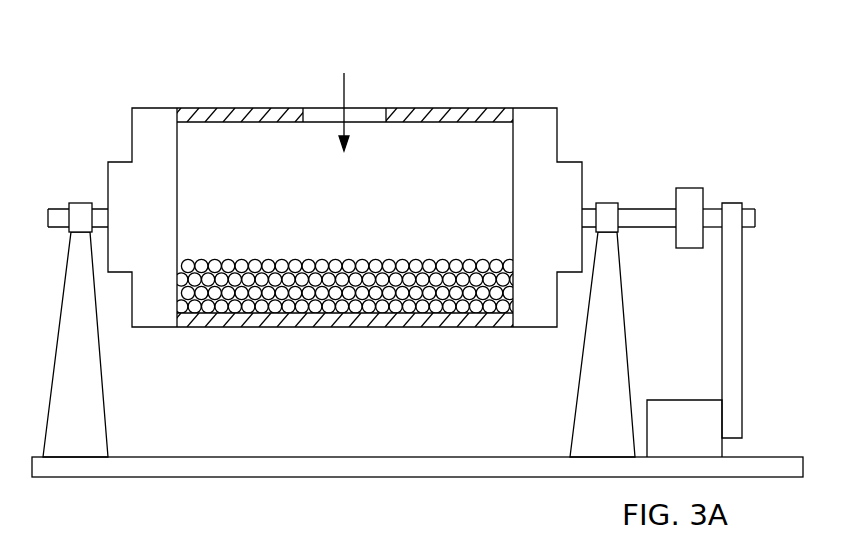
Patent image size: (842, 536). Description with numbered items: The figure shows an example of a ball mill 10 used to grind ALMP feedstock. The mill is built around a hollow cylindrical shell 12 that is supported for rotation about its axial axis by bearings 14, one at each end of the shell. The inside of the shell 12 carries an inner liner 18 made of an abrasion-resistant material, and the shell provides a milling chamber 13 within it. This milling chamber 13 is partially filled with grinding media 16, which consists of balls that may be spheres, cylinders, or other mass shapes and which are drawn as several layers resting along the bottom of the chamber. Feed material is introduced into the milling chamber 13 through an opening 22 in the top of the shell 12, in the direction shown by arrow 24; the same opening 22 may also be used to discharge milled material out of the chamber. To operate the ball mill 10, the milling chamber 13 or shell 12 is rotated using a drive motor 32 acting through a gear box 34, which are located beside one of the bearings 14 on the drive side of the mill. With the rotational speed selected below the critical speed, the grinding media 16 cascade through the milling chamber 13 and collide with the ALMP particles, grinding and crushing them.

The ball mill 10 is at (519, 86).
The hollow cylindrical shell 12 is at (237, 108).
The milling chamber 13 is at (436, 140).
The bearings 14 is at (85, 203).
The grinding media 16 is at (407, 305).
The inner liner 18 is at (283, 318).
The opening 22 is at (325, 112).
The arrow 24 is at (355, 112).
The drive motor 32 is at (685, 413).
The gear box 34 is at (690, 188).